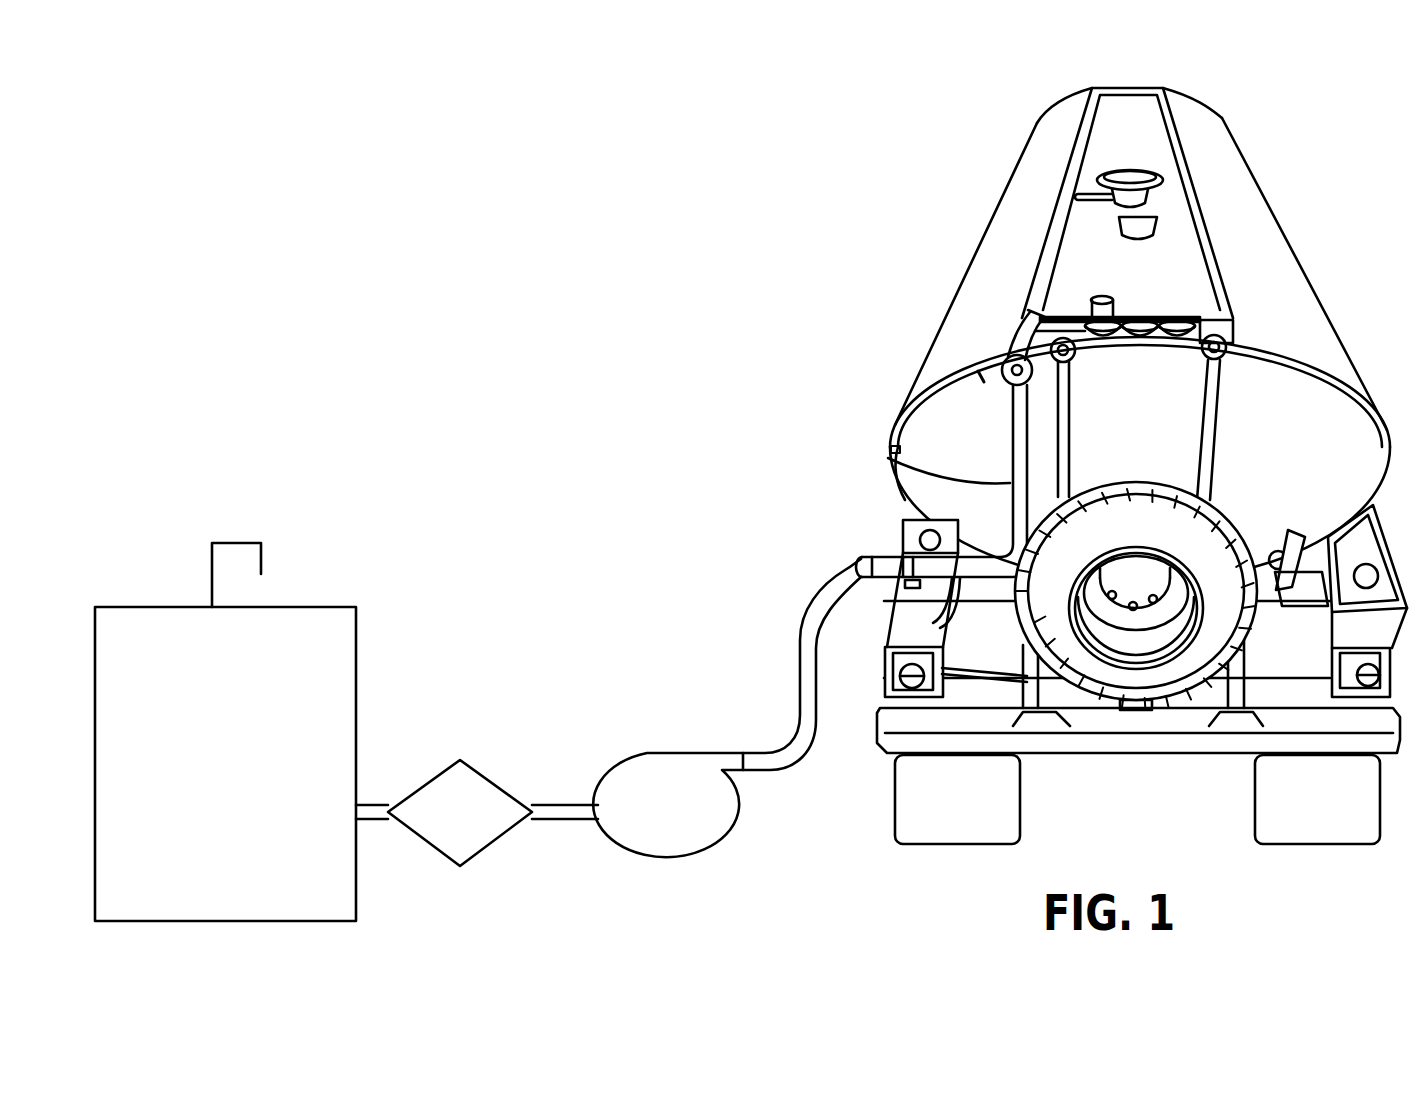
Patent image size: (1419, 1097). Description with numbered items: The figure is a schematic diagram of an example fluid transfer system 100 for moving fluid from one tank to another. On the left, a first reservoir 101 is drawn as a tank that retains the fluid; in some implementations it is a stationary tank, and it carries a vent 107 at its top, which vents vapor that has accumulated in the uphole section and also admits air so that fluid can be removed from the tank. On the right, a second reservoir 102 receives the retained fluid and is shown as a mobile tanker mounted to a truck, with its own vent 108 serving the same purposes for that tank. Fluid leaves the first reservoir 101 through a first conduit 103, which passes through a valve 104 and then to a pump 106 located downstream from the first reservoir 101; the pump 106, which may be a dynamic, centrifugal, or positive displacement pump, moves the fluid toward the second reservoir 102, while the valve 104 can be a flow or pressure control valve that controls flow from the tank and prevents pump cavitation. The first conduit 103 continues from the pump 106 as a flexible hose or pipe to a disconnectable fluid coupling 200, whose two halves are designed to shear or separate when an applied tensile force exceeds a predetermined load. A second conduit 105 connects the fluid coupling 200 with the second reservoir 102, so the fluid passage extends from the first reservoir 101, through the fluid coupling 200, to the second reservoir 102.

The fluid transfer system 100 is at (578, 351).
The first reservoir 101 is at (358, 646).
The second reservoir 102 is at (1163, 441).
The first conduit 103 is at (797, 712).
The valve 104 is at (480, 854).
The second conduit 105 is at (1010, 485).
The pump 106 is at (700, 858).
The vent 107 is at (245, 543).
The vent 108 is at (1006, 355).
The fluid coupling 200 is at (895, 556).